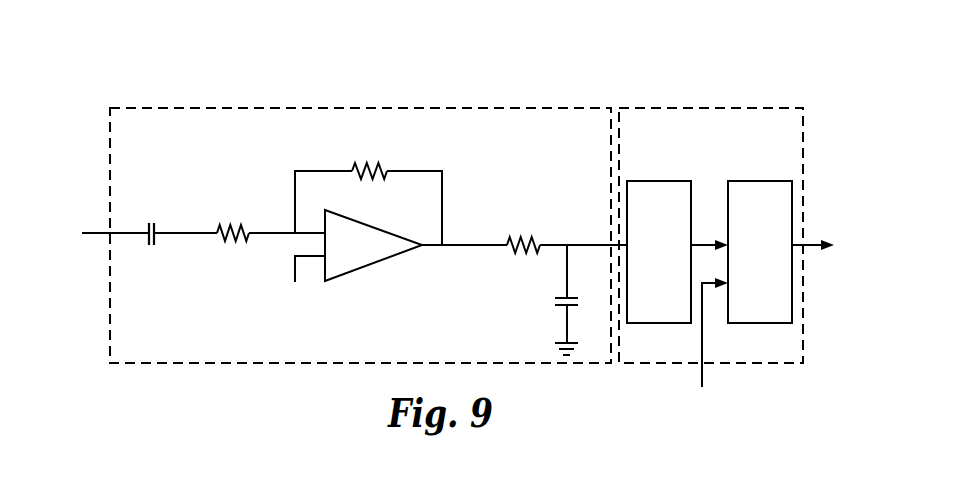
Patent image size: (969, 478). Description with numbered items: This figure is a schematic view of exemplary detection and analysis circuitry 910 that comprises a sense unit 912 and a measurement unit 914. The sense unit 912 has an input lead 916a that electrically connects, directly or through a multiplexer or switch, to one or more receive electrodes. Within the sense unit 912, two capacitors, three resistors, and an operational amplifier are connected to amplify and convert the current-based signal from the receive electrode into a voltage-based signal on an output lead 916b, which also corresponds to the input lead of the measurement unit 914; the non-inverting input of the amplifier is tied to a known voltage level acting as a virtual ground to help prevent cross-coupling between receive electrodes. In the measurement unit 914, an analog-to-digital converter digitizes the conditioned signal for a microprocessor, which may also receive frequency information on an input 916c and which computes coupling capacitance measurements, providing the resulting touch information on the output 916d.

The detection and analysis circuitry 910 is at (722, 78).
The sense unit 912 is at (218, 107).
The measurement unit 914 is at (693, 107).
The input lead 916a is at (100, 233).
The output lead 916b is at (614, 242).
The input 916c is at (702, 378).
The output 916d is at (817, 248).